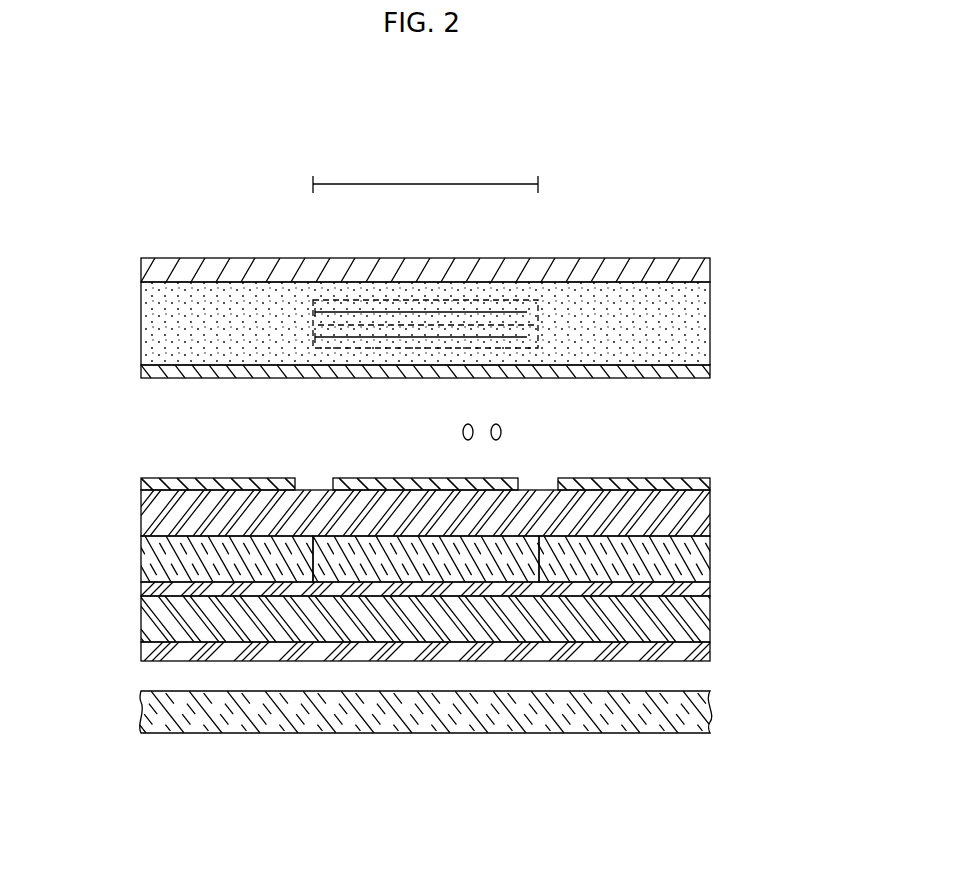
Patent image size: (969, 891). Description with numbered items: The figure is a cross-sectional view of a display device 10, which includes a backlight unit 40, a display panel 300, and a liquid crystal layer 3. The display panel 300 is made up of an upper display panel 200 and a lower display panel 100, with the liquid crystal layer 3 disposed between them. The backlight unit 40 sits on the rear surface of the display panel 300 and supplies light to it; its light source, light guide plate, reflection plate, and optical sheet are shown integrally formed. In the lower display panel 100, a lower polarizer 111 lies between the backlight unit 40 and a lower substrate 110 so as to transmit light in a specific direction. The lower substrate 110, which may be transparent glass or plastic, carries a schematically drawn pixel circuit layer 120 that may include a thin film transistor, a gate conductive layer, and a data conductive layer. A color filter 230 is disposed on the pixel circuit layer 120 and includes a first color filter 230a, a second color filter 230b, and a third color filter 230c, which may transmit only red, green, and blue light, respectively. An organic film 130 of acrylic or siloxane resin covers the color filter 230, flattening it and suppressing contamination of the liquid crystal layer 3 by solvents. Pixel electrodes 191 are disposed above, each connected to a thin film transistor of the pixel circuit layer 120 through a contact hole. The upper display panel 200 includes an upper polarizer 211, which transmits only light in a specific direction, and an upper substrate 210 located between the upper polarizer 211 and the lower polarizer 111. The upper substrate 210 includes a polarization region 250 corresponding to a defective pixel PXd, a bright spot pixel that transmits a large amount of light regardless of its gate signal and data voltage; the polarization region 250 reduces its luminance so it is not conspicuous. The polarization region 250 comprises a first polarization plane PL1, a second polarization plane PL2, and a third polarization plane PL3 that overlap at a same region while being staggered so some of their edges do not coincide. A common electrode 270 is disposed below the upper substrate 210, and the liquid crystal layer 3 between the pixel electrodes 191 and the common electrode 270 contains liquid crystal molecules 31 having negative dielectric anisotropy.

The display device 10 is at (432, 114).
The display panel 300 is at (272, 785).
The upper display panel 200 is at (630, 246).
The upper polarizer 211 is at (712, 278).
The upper substrate 210 is at (712, 322).
The common electrode 270 is at (712, 372).
The polarization region 250 is at (392, 300).
The first polarization plane PL1 is at (319, 336).
The second polarization plane PL2 is at (530, 324).
The third polarization plane PL3 is at (472, 312).
The defective pixel PXd is at (425, 170).
The liquid crystal layer 3 is at (713, 380).
The liquid crystal molecules 31 is at (502, 432).
The lower display panel 100 is at (118, 629).
The pixel electrode 191 is at (172, 478).
The organic film 130 is at (152, 514).
The color filter 230 is at (156, 783).
The first color filter 230a is at (150, 559).
The second color filter 230b is at (385, 563).
The third color filter 230c is at (706, 553).
The pixel circuit layer 120 is at (706, 590).
The lower substrate 110 is at (706, 616).
The lower polarizer 111 is at (706, 648).
The backlight unit 40 is at (706, 712).